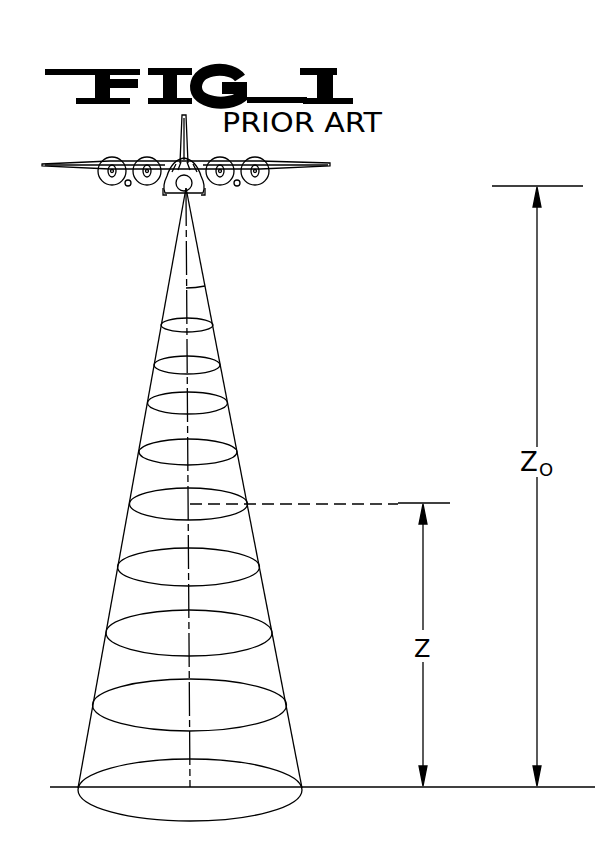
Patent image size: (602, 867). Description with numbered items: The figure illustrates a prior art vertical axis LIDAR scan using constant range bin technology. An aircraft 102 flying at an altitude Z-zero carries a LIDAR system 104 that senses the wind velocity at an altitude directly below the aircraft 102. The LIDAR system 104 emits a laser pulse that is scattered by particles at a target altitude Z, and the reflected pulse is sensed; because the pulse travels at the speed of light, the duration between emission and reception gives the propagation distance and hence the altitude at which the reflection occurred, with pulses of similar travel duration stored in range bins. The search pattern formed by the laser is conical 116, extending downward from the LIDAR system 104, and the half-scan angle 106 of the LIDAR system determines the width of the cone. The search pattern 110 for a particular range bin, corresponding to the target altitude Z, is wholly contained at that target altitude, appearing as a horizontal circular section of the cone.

The aircraft 102 is at (280, 170).
The LIDAR system 104 is at (159, 192).
The half-scan angle 106 is at (207, 292).
The search pattern 110 is at (218, 490).
The conical search pattern 116 is at (269, 610).